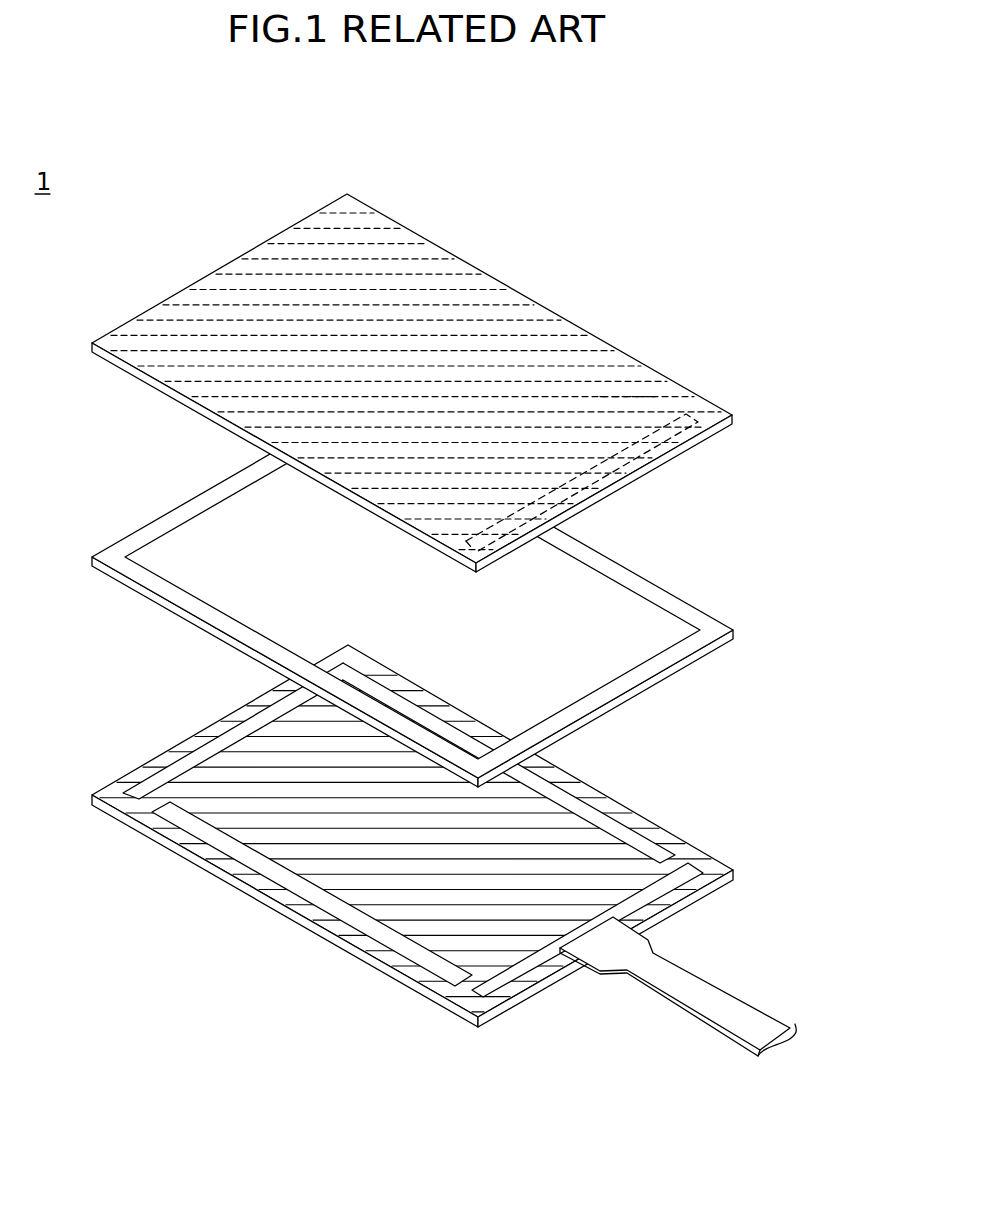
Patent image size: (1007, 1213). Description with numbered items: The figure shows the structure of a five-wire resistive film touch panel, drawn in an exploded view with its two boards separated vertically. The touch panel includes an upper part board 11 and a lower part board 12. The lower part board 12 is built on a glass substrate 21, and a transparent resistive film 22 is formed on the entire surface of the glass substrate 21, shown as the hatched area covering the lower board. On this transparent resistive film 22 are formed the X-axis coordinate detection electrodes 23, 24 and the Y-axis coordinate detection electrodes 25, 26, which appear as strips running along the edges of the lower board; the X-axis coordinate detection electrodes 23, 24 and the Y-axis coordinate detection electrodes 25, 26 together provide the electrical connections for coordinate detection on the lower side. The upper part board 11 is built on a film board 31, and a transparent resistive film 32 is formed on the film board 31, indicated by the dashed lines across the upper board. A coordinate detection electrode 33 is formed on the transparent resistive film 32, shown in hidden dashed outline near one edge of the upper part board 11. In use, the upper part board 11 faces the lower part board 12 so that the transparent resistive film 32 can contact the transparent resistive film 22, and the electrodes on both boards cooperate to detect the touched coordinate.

The upper part board 11 is at (418, 383).
The lower part board 12 is at (449, 850).
The glass substrate 21 is at (442, 1000).
The transparent resistive film 22 is at (588, 847).
The X-axis coordinate detection electrode 23 is at (181, 757).
The X-axis coordinate detection electrode 24 is at (670, 883).
The Y-axis coordinate detection electrode 25 is at (262, 864).
The Y-axis coordinate detection electrode 26 is at (565, 802).
The film board 31 is at (383, 232).
The transparent resistive film 32 is at (622, 393).
The coordinate detection electrode 33 is at (677, 455).